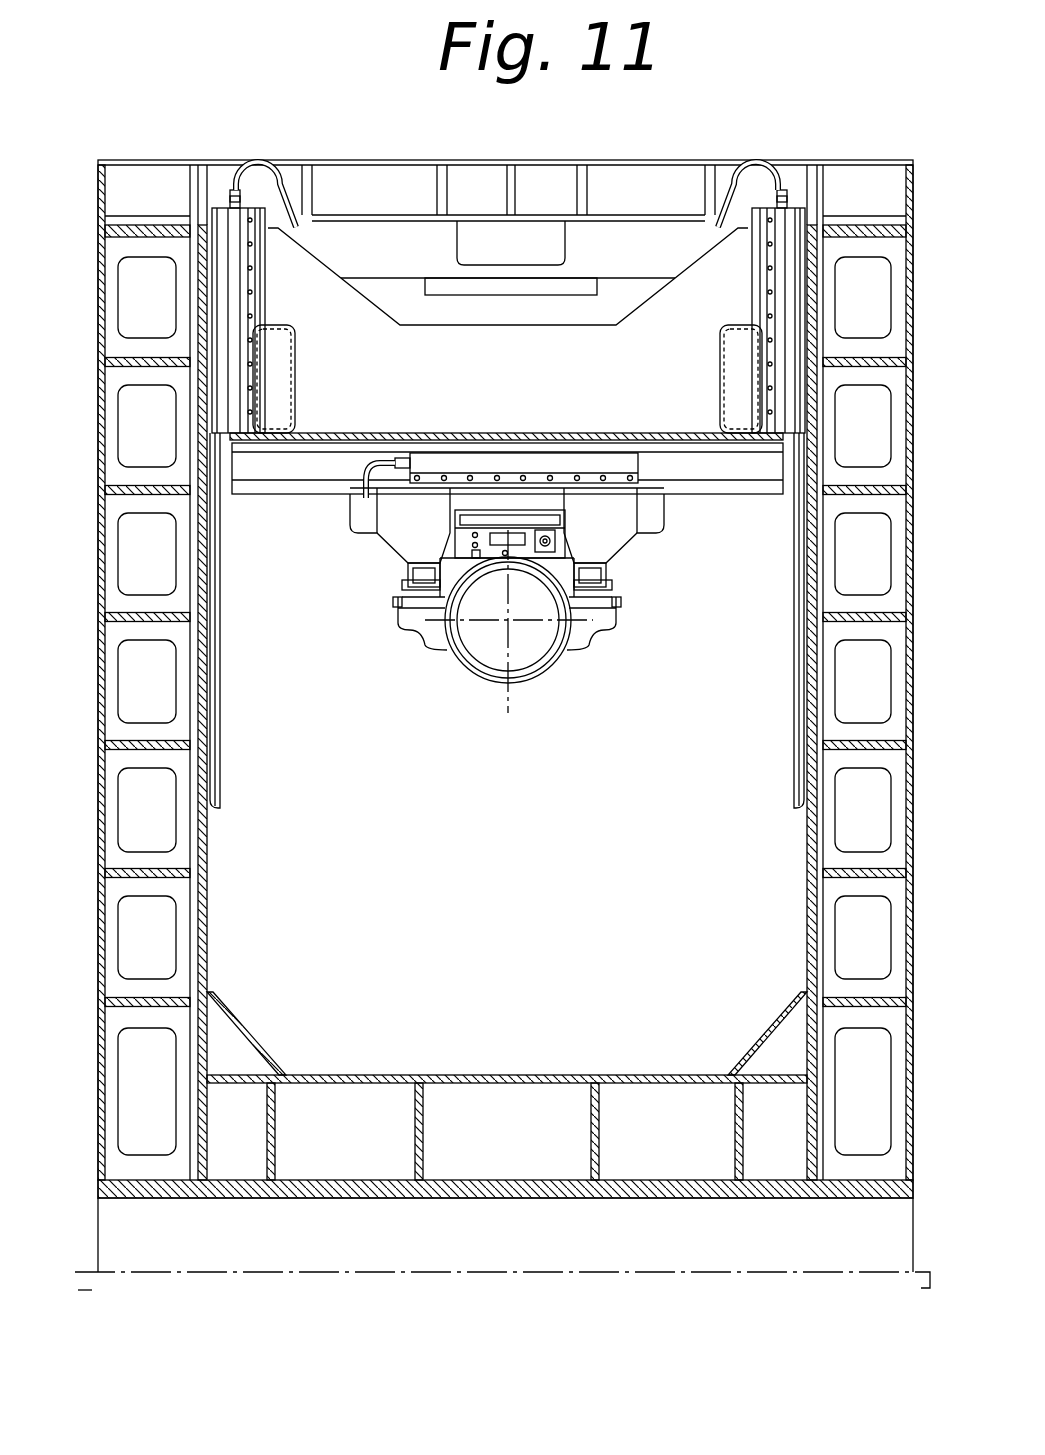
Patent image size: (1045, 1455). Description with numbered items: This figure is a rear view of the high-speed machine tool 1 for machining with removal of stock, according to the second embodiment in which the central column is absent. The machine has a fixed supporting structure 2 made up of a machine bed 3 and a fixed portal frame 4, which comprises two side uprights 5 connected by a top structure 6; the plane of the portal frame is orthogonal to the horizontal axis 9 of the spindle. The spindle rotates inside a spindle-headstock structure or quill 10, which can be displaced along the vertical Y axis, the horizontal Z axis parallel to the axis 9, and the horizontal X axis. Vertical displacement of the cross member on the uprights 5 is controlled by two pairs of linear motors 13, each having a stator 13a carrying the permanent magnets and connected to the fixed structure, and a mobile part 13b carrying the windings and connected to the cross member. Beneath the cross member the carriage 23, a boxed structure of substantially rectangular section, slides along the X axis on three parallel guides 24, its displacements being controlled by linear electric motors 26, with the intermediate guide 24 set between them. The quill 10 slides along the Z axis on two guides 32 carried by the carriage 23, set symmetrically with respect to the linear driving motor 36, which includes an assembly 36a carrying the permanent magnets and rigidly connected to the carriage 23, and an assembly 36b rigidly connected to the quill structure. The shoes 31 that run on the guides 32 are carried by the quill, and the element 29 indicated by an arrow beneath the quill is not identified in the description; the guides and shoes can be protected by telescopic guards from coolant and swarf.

The high-speed machine tool 1 is at (778, 113).
The fixed supporting structure 2 is at (94, 1210).
The machine bed 3 is at (320, 1077).
The fixed portal frame 4 is at (76, 180).
The side uprights 5 is at (102, 268).
The top structure 6 is at (390, 186).
The horizontal axis of the spindle 9 is at (512, 625).
The spindle-headstock structure or quill 10 is at (475, 673).
The linear electric motors 13 is at (206, 198).
The stator 13a is at (230, 749).
The mobile assembly 13b is at (232, 320).
The carriage 23 is at (397, 528).
The parallel guides 24 is at (250, 487).
The linear electric motors 26 is at (613, 463).
The clamping unit 29 is at (409, 649).
The shoes 31 is at (400, 595).
The guides 32 is at (407, 582).
The linear driving motor 36 is at (568, 541).
The permanent-magnet assembly 36a is at (472, 514).
The winding assembly 36b is at (447, 537).